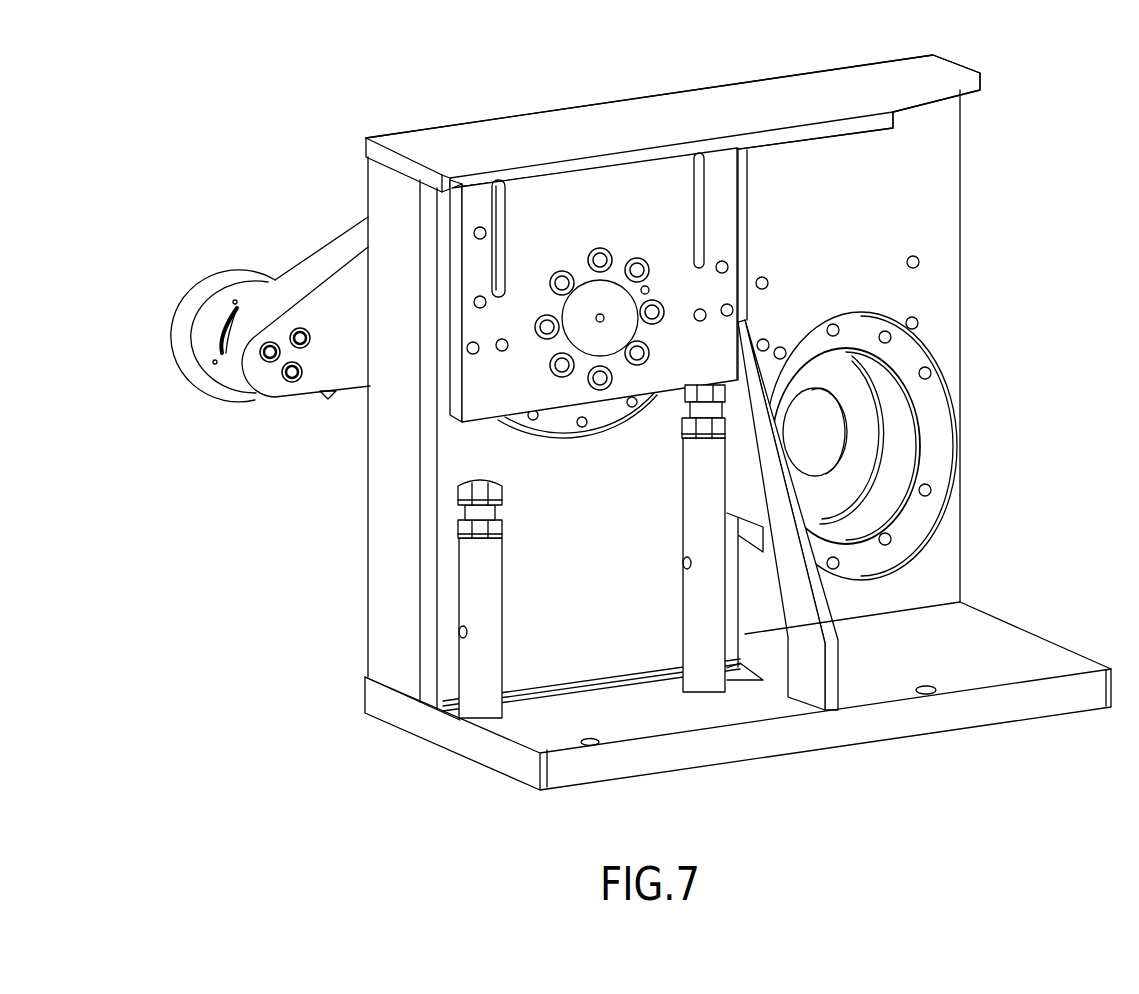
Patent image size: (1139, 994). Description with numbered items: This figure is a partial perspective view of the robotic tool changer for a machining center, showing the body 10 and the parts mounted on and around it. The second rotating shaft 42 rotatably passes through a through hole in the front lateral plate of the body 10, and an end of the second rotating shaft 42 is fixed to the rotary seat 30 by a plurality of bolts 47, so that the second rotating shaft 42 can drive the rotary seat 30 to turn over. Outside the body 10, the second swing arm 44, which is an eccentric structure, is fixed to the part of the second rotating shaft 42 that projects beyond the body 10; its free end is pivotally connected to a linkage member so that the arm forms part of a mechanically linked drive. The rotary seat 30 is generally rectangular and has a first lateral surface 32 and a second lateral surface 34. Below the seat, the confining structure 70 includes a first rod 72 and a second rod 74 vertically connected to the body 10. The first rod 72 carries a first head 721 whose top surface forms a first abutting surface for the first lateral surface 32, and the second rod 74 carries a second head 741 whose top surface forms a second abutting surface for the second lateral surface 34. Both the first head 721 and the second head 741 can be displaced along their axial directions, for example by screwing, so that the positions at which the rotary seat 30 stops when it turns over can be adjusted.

The body 10 is at (962, 137).
The rotary seat 30 is at (568, 160).
The first lateral surface 32 is at (688, 402).
The second lateral surface 34 is at (457, 328).
The second rotating shaft 42 is at (620, 298).
The second swing arm 44 is at (303, 258).
The bolts 47 is at (602, 250).
The confining structure 70 is at (671, 551).
The first rod 72 is at (704, 538).
The first head 721 is at (722, 390).
The second rod 74 is at (382, 599).
The second head 741 is at (462, 493).